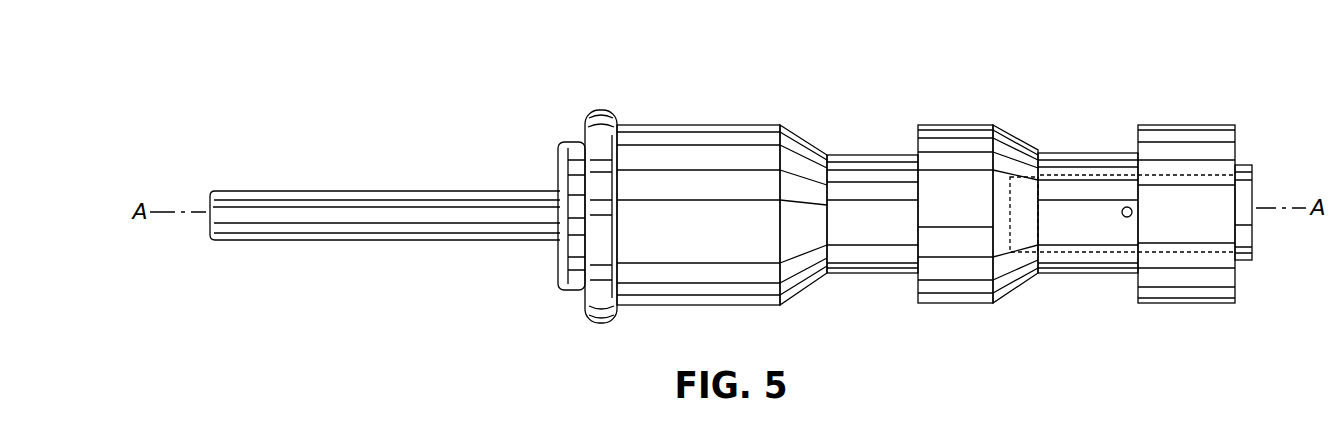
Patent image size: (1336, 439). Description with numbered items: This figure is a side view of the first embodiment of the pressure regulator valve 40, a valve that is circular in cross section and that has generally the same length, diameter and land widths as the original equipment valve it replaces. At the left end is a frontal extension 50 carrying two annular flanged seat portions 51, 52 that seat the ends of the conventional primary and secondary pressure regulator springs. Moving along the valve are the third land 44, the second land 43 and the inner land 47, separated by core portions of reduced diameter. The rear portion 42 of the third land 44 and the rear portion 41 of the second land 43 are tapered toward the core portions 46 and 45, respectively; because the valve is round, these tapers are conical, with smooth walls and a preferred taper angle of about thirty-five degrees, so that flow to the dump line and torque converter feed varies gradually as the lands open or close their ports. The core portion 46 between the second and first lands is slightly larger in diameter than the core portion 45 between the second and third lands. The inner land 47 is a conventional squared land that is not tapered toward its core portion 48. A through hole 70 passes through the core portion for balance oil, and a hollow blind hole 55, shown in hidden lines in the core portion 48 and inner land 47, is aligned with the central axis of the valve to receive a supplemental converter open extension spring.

The pressure regulator valve 40 is at (782, 91).
The rear portion of the second land 41 is at (1016, 138).
The rear portion of the third land 42 is at (806, 273).
The second land 43 is at (955, 125).
The third land 44 is at (692, 125).
The core portion 45 is at (1087, 153).
The core portion 46 is at (868, 155).
The inner land 47 is at (1192, 125).
The core portion 48 is at (1250, 165).
The frontal extension 50 is at (408, 191).
The annular flanged seat portion 51 is at (585, 112).
The annular flanged seat portion 52 is at (548, 142).
The hollow blind hole 55 is at (1075, 253).
The through hole 70 is at (1127, 207).